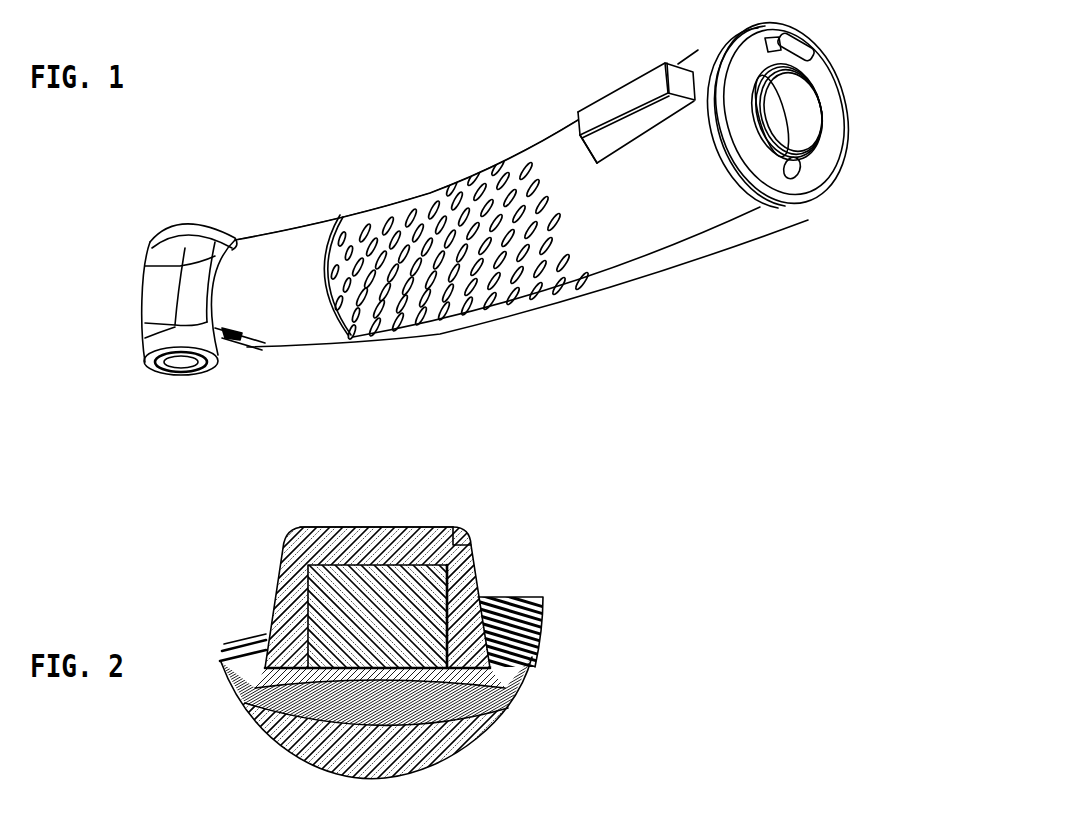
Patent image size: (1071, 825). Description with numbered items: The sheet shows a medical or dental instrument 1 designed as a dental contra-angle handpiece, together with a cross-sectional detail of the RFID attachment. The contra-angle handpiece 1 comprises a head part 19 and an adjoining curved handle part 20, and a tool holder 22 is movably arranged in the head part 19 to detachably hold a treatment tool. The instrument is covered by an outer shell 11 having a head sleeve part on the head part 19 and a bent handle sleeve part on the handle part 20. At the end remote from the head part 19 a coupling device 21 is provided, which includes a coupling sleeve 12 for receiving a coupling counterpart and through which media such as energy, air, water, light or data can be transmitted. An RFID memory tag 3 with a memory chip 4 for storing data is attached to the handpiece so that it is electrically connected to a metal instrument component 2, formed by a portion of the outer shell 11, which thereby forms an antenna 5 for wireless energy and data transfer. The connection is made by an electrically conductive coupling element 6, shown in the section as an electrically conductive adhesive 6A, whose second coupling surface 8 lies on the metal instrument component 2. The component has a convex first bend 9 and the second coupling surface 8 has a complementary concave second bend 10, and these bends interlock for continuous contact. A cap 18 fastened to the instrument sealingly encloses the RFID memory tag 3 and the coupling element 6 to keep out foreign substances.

In FIG. 1, the medical or dental instrument 1 is at (513, 219).
In FIG. 2, the medical or dental instrument 1 is at (377, 636).
In FIG. 1, the metal instrument component 2 is at (395, 226).
In FIG. 2, the metal instrument component 2 is at (396, 720).
In FIG. 1, the antenna 5 is at (563, 142).
In FIG. 2, the antenna 5 is at (499, 726).
In FIG. 1, the RFID memory tag 3 is at (622, 100).
In FIG. 2, the RFID memory tag 3 is at (376, 578).
In FIG. 2, the memory chip 4 is at (327, 585).
In FIG. 1, the electrically conductive coupling element 6 is at (633, 143).
In FIG. 2, the electrically conductive coupling element 6 is at (367, 680).
In FIG. 2, the electrically conductive adhesive 6A is at (498, 681).
In FIG. 2, the second coupling surface 8 is at (300, 710).
In FIG. 2, the first bend 9 is at (265, 668).
In FIG. 2, the second bend 10 is at (498, 707).
In FIG. 1, the outer shell 11 is at (357, 168).
In FIG. 2, the outer shell 11 is at (536, 656).
In FIG. 1, the coupling sleeve 12 is at (787, 111).
In FIG. 1, the cap 18 is at (641, 76).
In FIG. 2, the cap 18 is at (325, 527).
In FIG. 1, the head part 19 is at (198, 298).
In FIG. 1, the handle part 20 is at (372, 359).
In FIG. 1, the coupling device 21 is at (796, 113).
In FIG. 1, the tool holder 22 is at (178, 379).